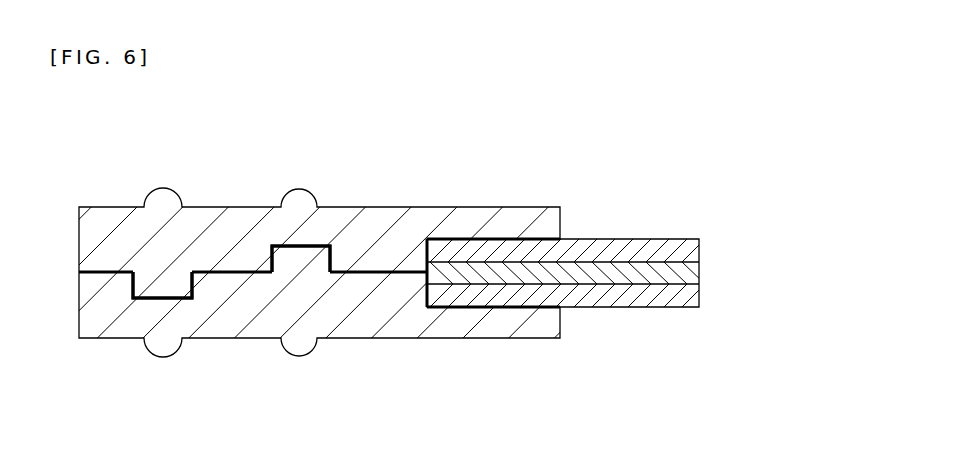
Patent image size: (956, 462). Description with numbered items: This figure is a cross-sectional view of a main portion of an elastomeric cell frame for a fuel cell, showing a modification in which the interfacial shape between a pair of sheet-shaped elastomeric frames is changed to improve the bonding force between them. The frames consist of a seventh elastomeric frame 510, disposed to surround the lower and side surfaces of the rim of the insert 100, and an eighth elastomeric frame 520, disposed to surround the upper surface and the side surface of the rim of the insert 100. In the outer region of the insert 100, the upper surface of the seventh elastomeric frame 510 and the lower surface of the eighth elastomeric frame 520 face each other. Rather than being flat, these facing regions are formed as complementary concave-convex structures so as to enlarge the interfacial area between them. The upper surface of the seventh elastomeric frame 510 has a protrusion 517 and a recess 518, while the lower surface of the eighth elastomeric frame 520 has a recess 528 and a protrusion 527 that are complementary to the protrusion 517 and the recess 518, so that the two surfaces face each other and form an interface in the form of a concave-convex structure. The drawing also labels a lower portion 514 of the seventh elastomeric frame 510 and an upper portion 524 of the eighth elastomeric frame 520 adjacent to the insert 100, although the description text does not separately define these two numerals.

The insert 100 is at (720, 275).
The seventh elastomeric frame 510 is at (107, 322).
The lower cell contact surface 514 is at (560, 325).
The protrusion 517 is at (302, 263).
The recess 518 is at (182, 295).
The eighth elastomeric frame 520 is at (107, 222).
The upper cell contact surface 524 is at (560, 223).
The protrusion 527 is at (163, 277).
The recess 528 is at (308, 256).